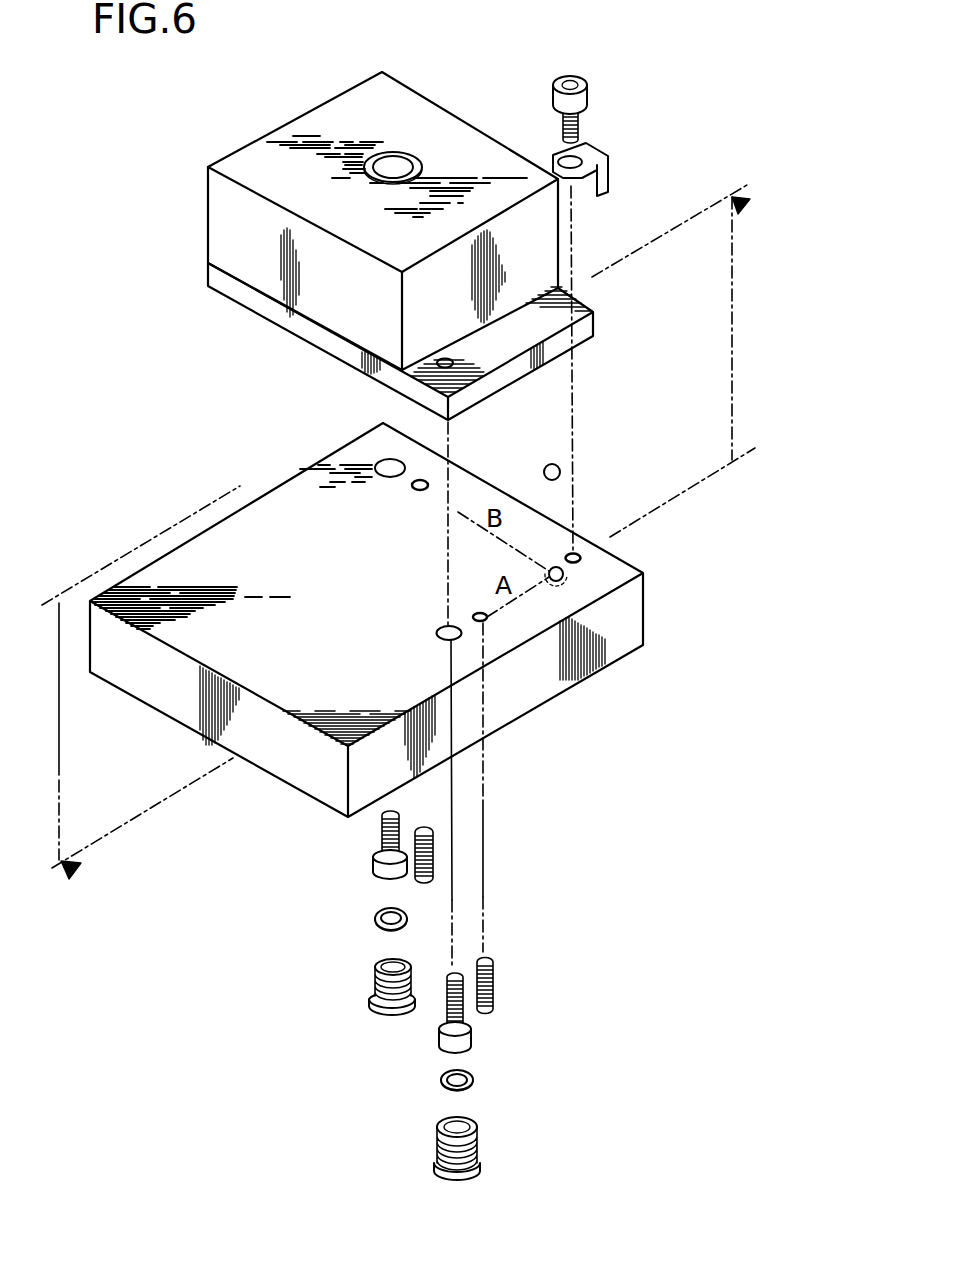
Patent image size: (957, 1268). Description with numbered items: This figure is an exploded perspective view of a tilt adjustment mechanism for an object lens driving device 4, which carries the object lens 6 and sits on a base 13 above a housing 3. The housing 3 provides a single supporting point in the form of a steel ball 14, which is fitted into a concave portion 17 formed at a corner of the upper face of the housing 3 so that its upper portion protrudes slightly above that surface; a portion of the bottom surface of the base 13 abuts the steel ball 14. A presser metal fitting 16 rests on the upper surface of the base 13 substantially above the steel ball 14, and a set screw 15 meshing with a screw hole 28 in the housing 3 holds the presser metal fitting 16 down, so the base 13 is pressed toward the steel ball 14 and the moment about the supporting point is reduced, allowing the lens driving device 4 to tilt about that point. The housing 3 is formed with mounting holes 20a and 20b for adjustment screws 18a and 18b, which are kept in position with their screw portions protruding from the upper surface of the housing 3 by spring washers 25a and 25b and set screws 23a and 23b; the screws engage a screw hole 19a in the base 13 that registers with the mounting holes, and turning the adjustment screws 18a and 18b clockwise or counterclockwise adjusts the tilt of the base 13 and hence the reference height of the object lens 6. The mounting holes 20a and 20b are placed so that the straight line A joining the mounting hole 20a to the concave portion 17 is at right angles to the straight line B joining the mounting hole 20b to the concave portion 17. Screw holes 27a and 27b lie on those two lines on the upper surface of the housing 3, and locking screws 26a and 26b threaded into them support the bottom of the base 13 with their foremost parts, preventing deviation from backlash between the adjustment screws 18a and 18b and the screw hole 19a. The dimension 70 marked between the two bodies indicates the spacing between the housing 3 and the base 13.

The housing 3 is at (280, 518).
The object lens driving device 4 is at (370, 100).
The object lens 6 is at (393, 168).
The base 13 is at (578, 337).
The steel ball 14 is at (543, 472).
The set screw 15 is at (582, 76).
The presser metal fitting 16 is at (608, 160).
The concave portion 17 is at (570, 573).
The adjustment screw 18a is at (472, 1035).
The adjustment screw 18b is at (372, 866).
The screw hole 19a is at (455, 362).
The mounting hole 20a is at (461, 633).
The mounting hole 20b is at (383, 466).
The set screw 23a is at (480, 1152).
The set screw 23b is at (368, 1000).
The spring washer 25a is at (472, 1082).
The spring washer 25b is at (375, 922).
The locking screw 26a is at (495, 977).
The locking screw 26b is at (415, 874).
The screw hole 27a is at (488, 619).
The screw hole 27b is at (421, 480).
The screw hole 28 is at (581, 557).
The dimension (offset between plates) 70 is at (732, 197).